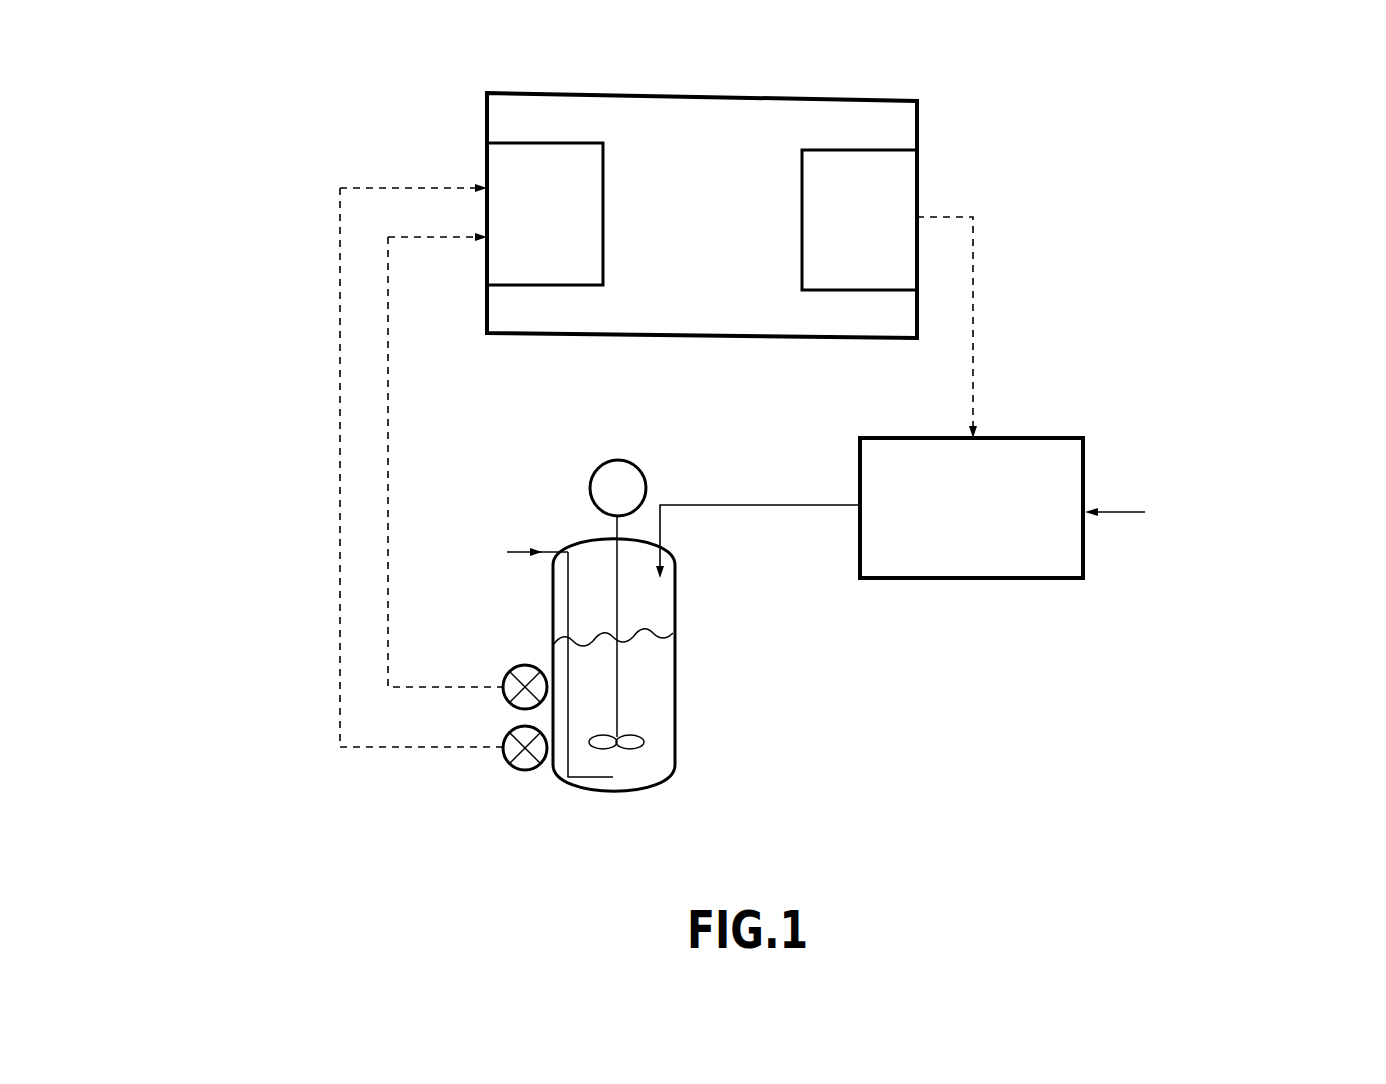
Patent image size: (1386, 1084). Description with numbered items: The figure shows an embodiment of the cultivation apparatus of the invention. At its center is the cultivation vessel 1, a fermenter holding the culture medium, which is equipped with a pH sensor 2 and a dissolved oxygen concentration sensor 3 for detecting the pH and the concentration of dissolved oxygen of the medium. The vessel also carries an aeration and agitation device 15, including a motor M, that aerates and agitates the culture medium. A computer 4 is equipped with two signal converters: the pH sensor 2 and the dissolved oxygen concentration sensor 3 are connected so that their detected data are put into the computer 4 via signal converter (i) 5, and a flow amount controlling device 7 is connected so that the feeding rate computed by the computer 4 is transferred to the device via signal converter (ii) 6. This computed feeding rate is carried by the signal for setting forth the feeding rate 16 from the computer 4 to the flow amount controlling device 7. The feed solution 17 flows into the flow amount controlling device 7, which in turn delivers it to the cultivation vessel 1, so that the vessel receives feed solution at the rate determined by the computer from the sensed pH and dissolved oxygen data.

The cultivation vessel (fermenter) 1 is at (680, 719).
The pH sensor 2 is at (502, 766).
The dissolved oxygen concentration sensor 3 is at (516, 658).
The computer 4 is at (705, 100).
The signal converter (i) 5 is at (485, 152).
The signal converter (ii) 6 is at (921, 185).
The flow amount controlling device 7 is at (1003, 582).
The aeration and agitation device 15 is at (650, 467).
The signal for setting forth the feeding rate 16 is at (978, 335).
The feed solution 17 is at (1125, 512).